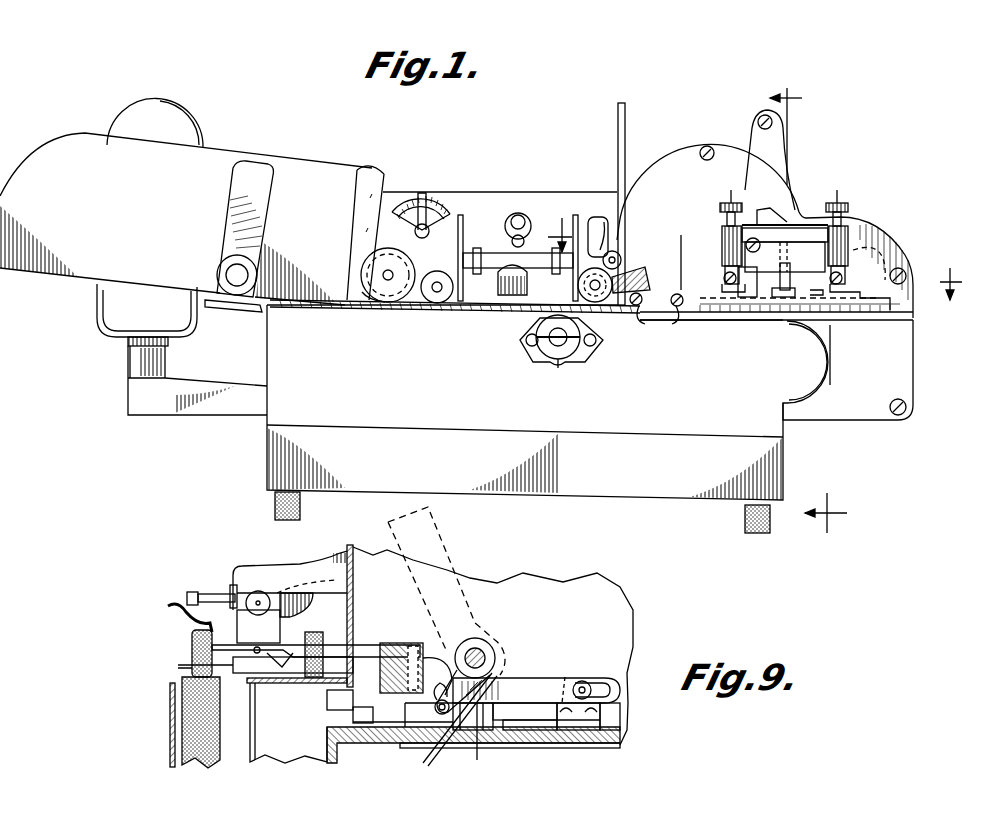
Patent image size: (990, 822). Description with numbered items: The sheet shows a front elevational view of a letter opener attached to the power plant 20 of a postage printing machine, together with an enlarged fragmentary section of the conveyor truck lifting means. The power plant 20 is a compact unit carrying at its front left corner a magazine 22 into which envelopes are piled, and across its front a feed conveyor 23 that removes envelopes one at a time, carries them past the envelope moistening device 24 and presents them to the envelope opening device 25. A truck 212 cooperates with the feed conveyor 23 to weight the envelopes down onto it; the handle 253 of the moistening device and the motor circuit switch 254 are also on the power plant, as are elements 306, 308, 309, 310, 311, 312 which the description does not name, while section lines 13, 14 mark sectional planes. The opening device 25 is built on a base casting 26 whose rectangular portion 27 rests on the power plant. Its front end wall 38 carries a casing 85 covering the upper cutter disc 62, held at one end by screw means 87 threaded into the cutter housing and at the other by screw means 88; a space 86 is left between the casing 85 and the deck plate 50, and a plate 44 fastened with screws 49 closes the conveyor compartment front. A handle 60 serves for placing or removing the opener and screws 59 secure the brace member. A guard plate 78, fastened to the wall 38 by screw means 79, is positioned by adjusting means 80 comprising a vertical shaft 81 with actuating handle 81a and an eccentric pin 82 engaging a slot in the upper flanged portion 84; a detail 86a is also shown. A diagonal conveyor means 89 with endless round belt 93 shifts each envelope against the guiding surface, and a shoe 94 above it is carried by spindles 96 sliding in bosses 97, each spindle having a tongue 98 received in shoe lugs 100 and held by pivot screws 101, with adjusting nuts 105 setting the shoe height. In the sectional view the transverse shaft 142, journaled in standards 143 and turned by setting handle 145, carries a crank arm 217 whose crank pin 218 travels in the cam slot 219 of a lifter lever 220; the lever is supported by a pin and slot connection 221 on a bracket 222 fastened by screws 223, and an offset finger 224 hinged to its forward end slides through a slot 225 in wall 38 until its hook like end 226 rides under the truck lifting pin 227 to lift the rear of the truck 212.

In FIG. 1, the section line 13 is at (760, 247).
In FIG. 1, the section line 14 is at (822, 310).
In FIG. 1, the power plant 20 is at (470, 190).
In FIG. 1, the magazine 22 is at (284, 152).
In FIG. 1, the feed conveyor 23 is at (416, 308).
In FIG. 1, the envelope moistening device 24 is at (540, 368).
In FIG. 1, the envelope opening device 25 is at (708, 145).
In FIG. 9, the base casting 26 is at (555, 750).
In FIG. 9, the rectangular portion 27 is at (622, 744).
In FIG. 1, the front end wall 38 is at (668, 160).
In FIG. 9, the front end wall 38 is at (352, 608).
In FIG. 1, the plate 44 is at (910, 365).
In FIG. 9, the plate 44 is at (255, 722).
In FIG. 1, the screws 49 is at (908, 410).
In FIG. 1, the deck plate 50 is at (913, 322).
In FIG. 9, the deck plate 50 is at (280, 684).
In FIG. 1, the screws 59 is at (715, 155).
In FIG. 1, the handle 60 is at (758, 118).
In FIG. 1, the upper cutter disc wheel 62 is at (880, 262).
In FIG. 1, the guard plate 78 is at (683, 262).
In FIG. 1, the screw means 79 is at (658, 320).
In FIG. 1, the adjusting means 80 is at (800, 215).
In FIG. 1, the vertical shaft 81 is at (794, 276).
In FIG. 1, the actuating handle 81a is at (770, 210).
In FIG. 1, the eccentric pin 82 is at (778, 302).
In FIG. 1, the upper flanged portion 84 is at (775, 286).
In FIG. 1, the casing 85 is at (878, 238).
In FIG. 1, the space 86 is at (913, 312).
In FIG. 1, the slot 86a is at (787, 244).
In FIG. 1, the screw means 87 is at (905, 270).
In FIG. 1, the screw means 88 is at (760, 250).
In FIG. 1, the diagonal conveyor means 89 is at (858, 322).
In FIG. 1, the endless round belt 93 is at (782, 292).
In FIG. 1, the shoe 94 is at (805, 305).
In FIG. 1, the spindles 96 is at (736, 205).
In FIG. 1, the bosses 97 is at (722, 248).
In FIG. 1, the tongue 98 is at (728, 270).
In FIG. 1, the shoe lugs 100 is at (724, 294).
In FIG. 1, the pivot screws 101 is at (726, 280).
In FIG. 1, the adjusting nuts 105 is at (730, 204).
In FIG. 9, the transverse shaft 142 is at (480, 658).
In FIG. 9, the standards 143 is at (495, 712).
In FIG. 1, the setting handle 145 is at (626, 114).
In FIG. 9, the setting handle 145 is at (442, 548).
In FIG. 1, the truck 212 is at (482, 307).
In FIG. 9, the truck 212 is at (190, 662).
In FIG. 9, the crank arm 217 is at (478, 750).
In FIG. 9, the crank pin 218 is at (456, 724).
In FIG. 9, the cam slot 219 is at (435, 704).
In FIG. 9, the lifter lever 220 is at (525, 680).
In FIG. 9, the pin and slot connection 221 is at (590, 678).
In FIG. 9, the bracket 222 is at (605, 709).
In FIG. 9, the screws 223 is at (604, 718).
In FIG. 1, the offset finger 224 is at (640, 268).
In FIG. 9, the offset finger 224 is at (400, 652).
In FIG. 1, the slot 225 is at (656, 300).
In FIG. 9, the slot 225 is at (350, 635).
In FIG. 9, the hook like end 226 is at (283, 675).
In FIG. 9, the truck lifting pin 227 is at (264, 638).
In FIG. 1, the handle 253 is at (578, 358).
In FIG. 1, the motor circuit switch 254 is at (522, 213).
In FIG. 1, the belt 306 is at (372, 306).
In FIG. 1, the hinge bar 308 is at (365, 222).
In FIG. 1, the gauge 309 is at (385, 190).
In FIG. 1, the cam 310 is at (360, 281).
In FIG. 1, the wheel 311 is at (383, 254).
In FIG. 1, the hub 312 is at (393, 272).